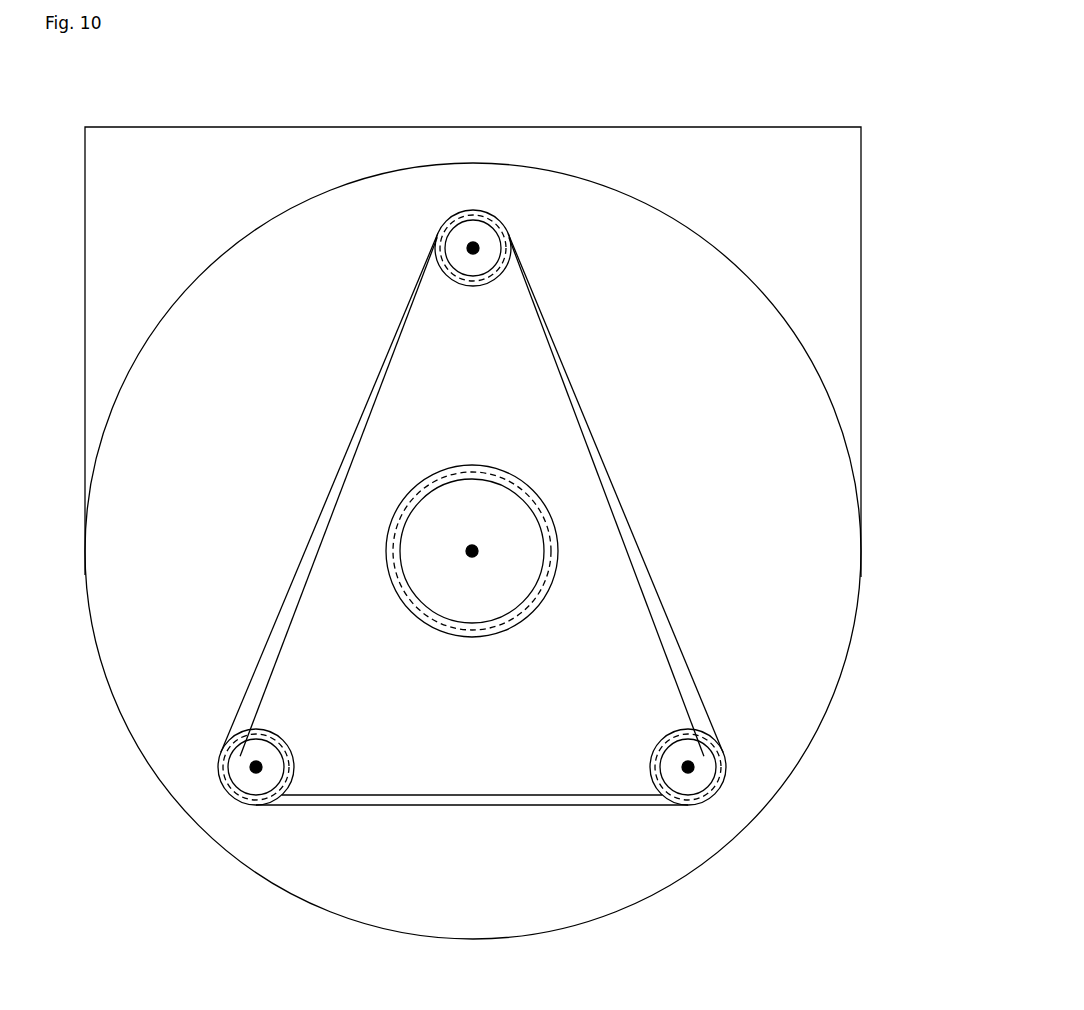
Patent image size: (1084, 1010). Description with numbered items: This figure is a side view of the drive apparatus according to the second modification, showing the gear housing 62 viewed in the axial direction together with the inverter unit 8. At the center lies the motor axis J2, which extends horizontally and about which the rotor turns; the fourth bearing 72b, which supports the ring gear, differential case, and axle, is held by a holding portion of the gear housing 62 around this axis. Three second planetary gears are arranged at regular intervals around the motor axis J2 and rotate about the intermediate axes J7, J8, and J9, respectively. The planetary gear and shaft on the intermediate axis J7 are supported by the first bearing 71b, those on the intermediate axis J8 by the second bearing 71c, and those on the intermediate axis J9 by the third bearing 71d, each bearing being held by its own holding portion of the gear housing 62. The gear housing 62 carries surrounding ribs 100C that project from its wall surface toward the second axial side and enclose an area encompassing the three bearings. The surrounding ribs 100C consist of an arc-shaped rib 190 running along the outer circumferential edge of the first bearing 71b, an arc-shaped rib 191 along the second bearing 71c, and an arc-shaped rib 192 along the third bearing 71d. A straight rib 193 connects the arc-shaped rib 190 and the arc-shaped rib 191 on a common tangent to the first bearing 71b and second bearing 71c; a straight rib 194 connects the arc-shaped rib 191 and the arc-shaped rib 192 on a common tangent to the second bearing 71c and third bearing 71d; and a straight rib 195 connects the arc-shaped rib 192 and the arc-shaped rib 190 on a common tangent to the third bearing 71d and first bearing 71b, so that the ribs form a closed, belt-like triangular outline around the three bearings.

The inverter unit 8 is at (866, 204).
The gear housing 62 is at (197, 831).
The surrounding ribs 100C is at (473, 568).
The arc-shaped rib 190 is at (492, 214).
The arc-shaped rib 191 is at (242, 803).
The arc-shaped rib 192 is at (700, 803).
The straight rib 193 is at (333, 475).
The straight rib 194 is at (487, 801).
The straight rib 195 is at (610, 485).
The intermediate axis J7 is at (472, 248).
The intermediate axis J8 is at (256, 767).
The intermediate axis J9 is at (688, 767).
The motor axis J2 is at (472, 546).
The first bearing 71b is at (507, 247).
The second bearing 71c is at (294, 752).
The third bearing 71d is at (660, 742).
The fourth bearing 72b is at (406, 597).